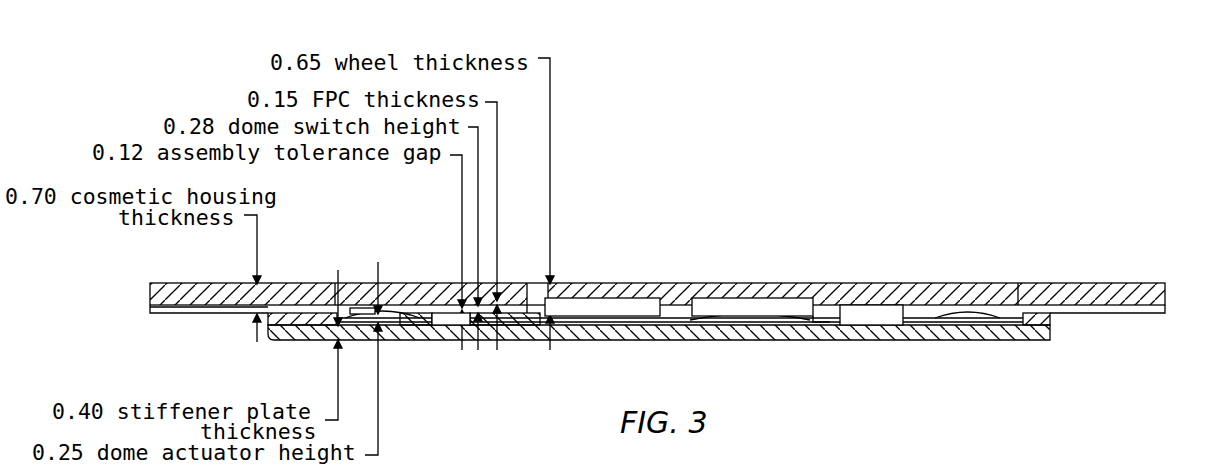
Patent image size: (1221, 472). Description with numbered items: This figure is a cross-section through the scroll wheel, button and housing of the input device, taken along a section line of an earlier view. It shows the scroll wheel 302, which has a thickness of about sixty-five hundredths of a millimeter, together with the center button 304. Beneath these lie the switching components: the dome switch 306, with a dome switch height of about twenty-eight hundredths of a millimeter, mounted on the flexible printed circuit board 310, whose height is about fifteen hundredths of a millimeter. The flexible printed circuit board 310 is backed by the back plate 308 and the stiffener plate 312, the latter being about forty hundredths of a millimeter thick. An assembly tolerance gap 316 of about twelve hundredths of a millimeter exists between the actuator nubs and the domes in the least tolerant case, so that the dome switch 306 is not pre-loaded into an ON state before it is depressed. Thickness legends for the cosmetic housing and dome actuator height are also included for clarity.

The scroll wheel 302 is at (877, 317).
The center button 304 is at (681, 317).
The dome switch 306 is at (333, 345).
The back plate 308 is at (575, 345).
The flexible printed circuit board 310 is at (417, 347).
The stiffener plate 312 is at (387, 345).
The assembly tolerance gap 316 is at (363, 345).